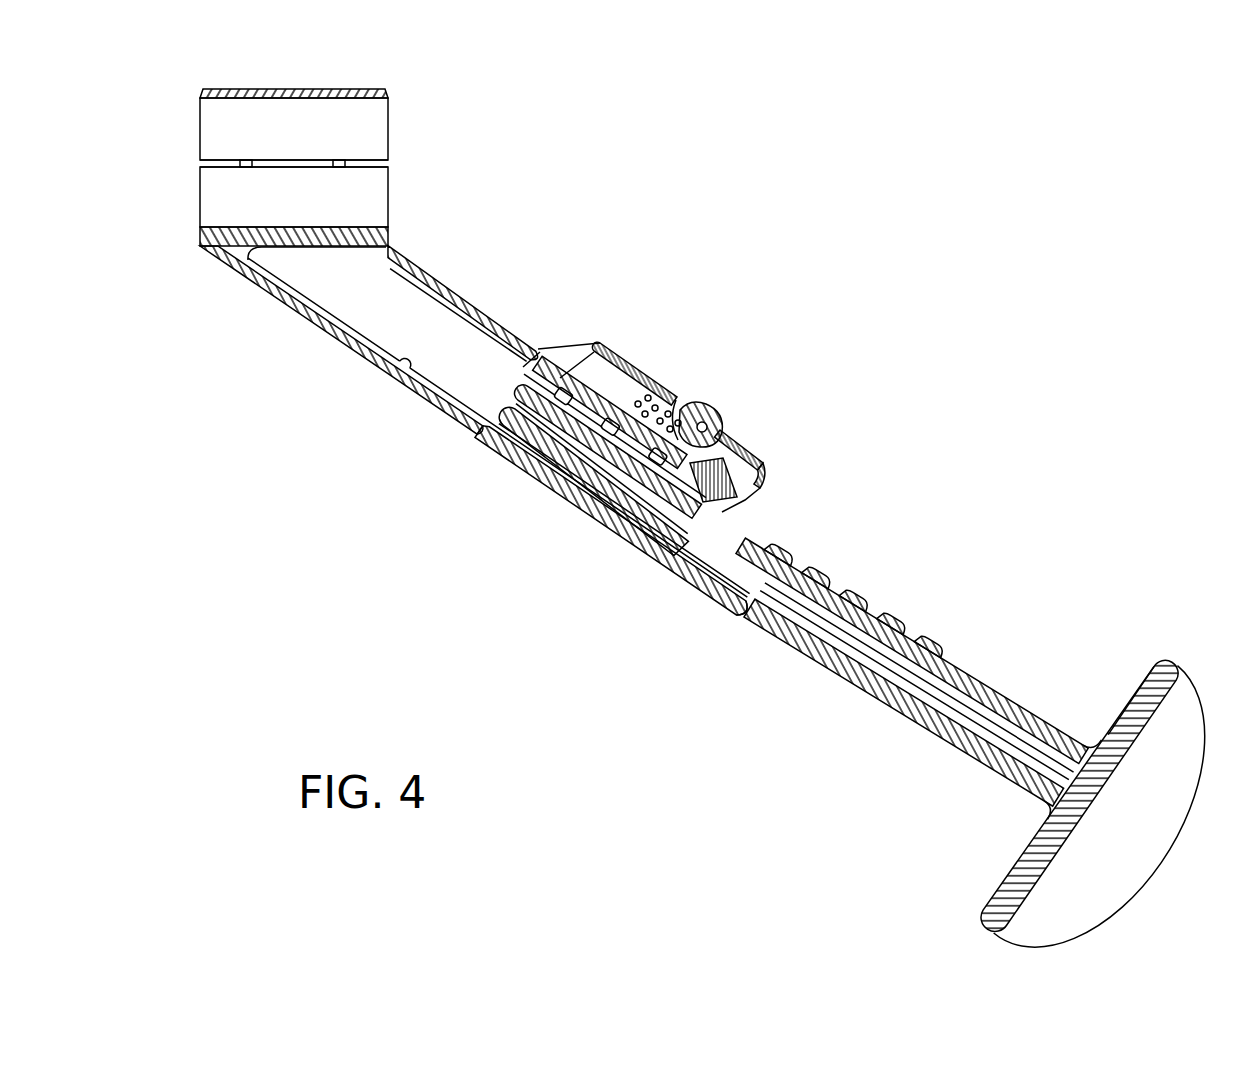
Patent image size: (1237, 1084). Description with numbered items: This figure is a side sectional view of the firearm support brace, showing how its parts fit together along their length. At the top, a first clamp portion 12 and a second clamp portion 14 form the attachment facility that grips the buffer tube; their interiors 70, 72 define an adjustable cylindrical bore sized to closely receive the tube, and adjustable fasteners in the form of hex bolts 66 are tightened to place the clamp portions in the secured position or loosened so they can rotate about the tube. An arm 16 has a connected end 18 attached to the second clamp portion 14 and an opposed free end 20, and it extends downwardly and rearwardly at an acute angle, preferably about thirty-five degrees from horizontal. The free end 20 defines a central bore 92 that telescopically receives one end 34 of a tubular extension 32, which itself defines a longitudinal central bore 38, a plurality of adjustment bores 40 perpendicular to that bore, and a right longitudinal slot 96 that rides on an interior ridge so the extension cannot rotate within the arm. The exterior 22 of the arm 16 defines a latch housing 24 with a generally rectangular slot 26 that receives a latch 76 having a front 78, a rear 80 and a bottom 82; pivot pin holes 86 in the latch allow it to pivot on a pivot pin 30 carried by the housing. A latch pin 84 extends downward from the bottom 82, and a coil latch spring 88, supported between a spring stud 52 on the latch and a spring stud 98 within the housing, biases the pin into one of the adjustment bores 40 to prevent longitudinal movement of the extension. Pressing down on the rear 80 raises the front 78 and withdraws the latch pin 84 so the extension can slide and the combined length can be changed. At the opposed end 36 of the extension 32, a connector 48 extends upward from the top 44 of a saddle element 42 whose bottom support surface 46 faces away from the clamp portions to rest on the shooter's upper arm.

The first clamp portion 12 is at (368, 89).
The interior of first clamp portion 70 is at (366, 100).
The hex bolt 66 is at (342, 163).
The second clamp portion 14 is at (392, 186).
The interior of second clamp portion 72 is at (366, 226).
The connected end 18 is at (392, 247).
The exterior of the arm 22 is at (467, 297).
The arm 16 is at (466, 430).
The central bore 92 is at (411, 368).
The end of the extension 34 is at (484, 430).
The longitudinal central bore 38 is at (526, 385).
The rectangular slot 26 is at (593, 365).
The rear of the latch 80 is at (597, 343).
The latch 76 is at (655, 370).
The spring stud 52 is at (642, 400).
The latch spring 88 is at (676, 392).
The pivot pin holes 86 is at (714, 392).
The pivot pin 30 is at (706, 424).
The front of the latch 78 is at (770, 467).
The latch housing 24 is at (774, 476).
The bottom of the latch 82 is at (748, 490).
The spring stud 98 is at (637, 452).
The latch pin 84 is at (661, 553).
The free end 20 is at (746, 618).
The adjustment bores 40 is at (882, 607).
The tubular extension 32 is at (848, 694).
The right longitudinal slot 96 is at (934, 698).
The saddle element 42 is at (1163, 650).
The top of the saddle element 44 is at (1138, 687).
The connector 48 is at (1092, 745).
The opposed end of the extension 36 is at (1045, 830).
The bottom support surface 46 is at (1085, 830).